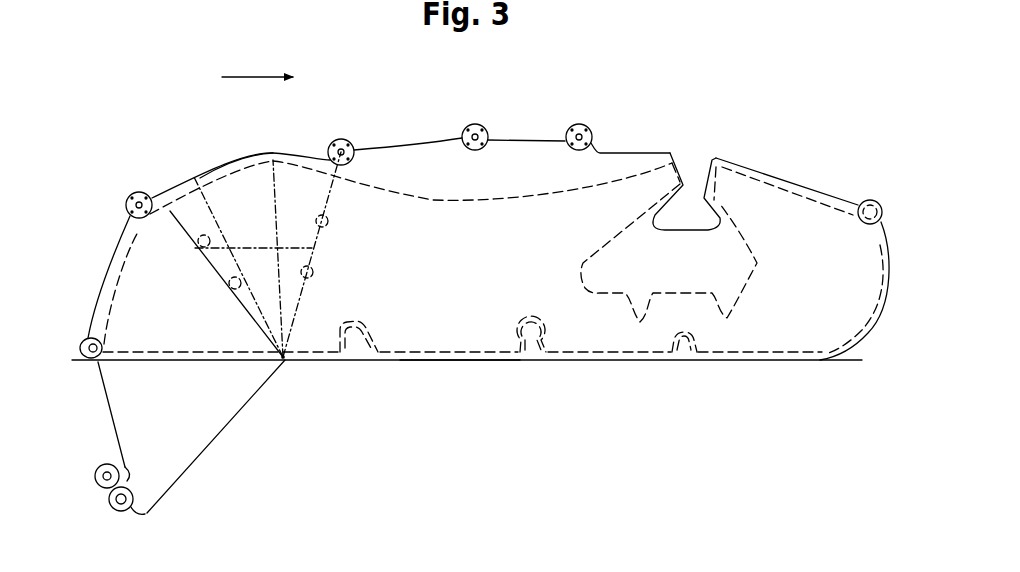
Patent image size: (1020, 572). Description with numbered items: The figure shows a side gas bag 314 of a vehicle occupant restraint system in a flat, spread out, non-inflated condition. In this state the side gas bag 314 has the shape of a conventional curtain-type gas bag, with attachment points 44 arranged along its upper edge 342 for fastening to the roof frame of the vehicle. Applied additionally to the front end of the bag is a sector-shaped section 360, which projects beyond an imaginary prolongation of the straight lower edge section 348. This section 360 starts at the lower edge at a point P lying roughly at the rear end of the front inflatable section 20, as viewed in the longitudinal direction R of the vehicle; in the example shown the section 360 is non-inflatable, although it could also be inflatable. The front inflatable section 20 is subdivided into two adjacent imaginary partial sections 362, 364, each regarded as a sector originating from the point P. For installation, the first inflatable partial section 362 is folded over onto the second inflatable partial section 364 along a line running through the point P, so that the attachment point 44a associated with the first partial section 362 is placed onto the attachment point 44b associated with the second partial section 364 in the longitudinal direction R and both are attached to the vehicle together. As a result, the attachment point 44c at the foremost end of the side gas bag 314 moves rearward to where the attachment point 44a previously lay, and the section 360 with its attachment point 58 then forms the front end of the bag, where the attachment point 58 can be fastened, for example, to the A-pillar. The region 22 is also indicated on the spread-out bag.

The side gas bag 314 is at (683, 108).
The attachment points 44 is at (472, 124).
The attachment point 44a is at (138, 192).
The attachment point 44b is at (346, 139).
The attachment point 44c is at (83, 337).
The upper edge 342 is at (226, 160).
The second inflatable partial section 364 is at (262, 220).
The first inflatable partial section 362 is at (195, 325).
The front inflatable section 20 is at (187, 283).
The cover body 22 is at (438, 283).
The lower edge section 348 is at (462, 362).
The point P is at (287, 362).
The longitudinal direction R is at (242, 77).
The sector-shaped section 360 is at (200, 420).
The attachment point 58 is at (127, 513).